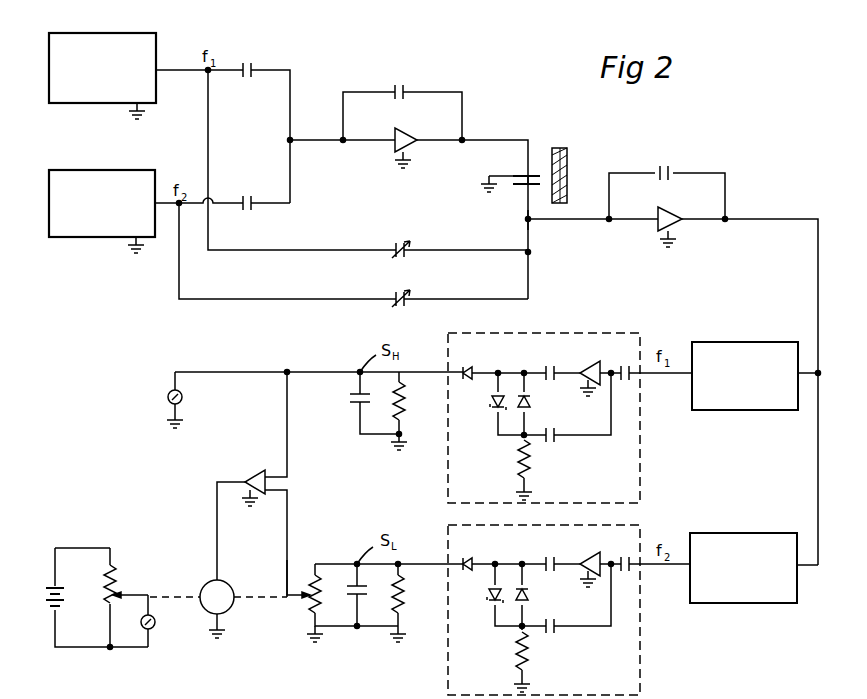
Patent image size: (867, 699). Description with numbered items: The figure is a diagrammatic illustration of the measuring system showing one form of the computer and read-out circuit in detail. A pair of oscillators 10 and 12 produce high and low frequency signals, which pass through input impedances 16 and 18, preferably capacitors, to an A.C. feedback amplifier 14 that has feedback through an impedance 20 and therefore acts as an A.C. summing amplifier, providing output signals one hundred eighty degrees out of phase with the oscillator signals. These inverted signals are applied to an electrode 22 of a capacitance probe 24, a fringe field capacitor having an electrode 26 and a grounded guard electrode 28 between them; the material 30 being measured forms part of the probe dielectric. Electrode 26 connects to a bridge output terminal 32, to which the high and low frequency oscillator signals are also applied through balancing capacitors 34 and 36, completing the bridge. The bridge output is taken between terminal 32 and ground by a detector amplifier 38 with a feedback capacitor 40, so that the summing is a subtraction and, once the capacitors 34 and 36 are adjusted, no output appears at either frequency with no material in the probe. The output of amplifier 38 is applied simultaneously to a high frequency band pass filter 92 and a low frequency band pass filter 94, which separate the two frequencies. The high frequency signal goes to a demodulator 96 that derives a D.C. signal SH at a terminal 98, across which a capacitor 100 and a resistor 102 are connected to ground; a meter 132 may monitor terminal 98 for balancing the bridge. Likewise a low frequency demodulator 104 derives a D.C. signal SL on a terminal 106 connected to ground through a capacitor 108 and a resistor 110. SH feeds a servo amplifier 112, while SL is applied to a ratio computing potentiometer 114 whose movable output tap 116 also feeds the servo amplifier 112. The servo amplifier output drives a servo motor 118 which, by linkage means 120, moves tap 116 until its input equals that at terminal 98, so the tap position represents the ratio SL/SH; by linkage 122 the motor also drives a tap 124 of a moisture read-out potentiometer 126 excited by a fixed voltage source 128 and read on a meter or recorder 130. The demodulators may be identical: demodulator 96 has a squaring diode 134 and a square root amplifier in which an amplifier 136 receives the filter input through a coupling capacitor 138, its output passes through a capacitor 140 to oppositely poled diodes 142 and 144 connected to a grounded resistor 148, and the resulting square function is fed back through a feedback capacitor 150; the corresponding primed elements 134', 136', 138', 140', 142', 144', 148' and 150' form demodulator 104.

The oscillator 10 is at (135, 33).
The low frequency oscillator 12 is at (129, 170).
The A.C. feedback amplifier 14 is at (411, 138).
The input impedance 16 is at (251, 68).
The input impedance 18 is at (251, 201).
The feedback impedance 20 is at (408, 91).
The electrode 22 is at (526, 174).
The capacitance probe 24 is at (540, 160).
The electrode 26 is at (524, 186).
The grounded guard electrode 28 is at (503, 172).
The material 30 is at (567, 158).
The bridge output terminal 32 is at (526, 224).
The balancing capacitor 34 is at (390, 247).
The balancing capacitor 36 is at (390, 295).
The detector amplifier 38 is at (673, 226).
The feedback capacitor 40 is at (669, 171).
The high frequency band pass filter 92 is at (752, 342).
The low frequency band pass filter 94 is at (752, 533).
The demodulator 96 is at (591, 333).
The terminal 98 is at (359, 368).
The capacitor 100 is at (355, 408).
The resistor 102 is at (402, 396).
The low frequency demodulator 104 is at (598, 526).
The terminal 106 is at (358, 556).
The capacitor 108 is at (360, 588).
The resistor 110 is at (399, 580).
The servo amplifier 112 is at (250, 474).
The ratio computing potentiometer 114 is at (318, 588).
The movable output tap 116 is at (293, 606).
The servo motor 118 is at (207, 582).
The linkage means 120 is at (256, 602).
The linkage 122 is at (160, 602).
The tap 124 is at (132, 590).
The moisture read-out potentiometer 126 is at (110, 574).
The fixed voltage source 128 is at (50, 584).
The meter or recorder 130 is at (154, 628).
The meter 132 is at (184, 398).
The diode 134 is at (480, 360).
The amplifier 136 is at (577, 368).
The coupling capacitor 138 is at (614, 357).
The capacitor 140 is at (530, 363).
The diode 142 is at (477, 405).
The diode 144 is at (543, 406).
The resistor 148 is at (542, 470).
The feedback capacitor 150 is at (575, 444).
The diode 134' is at (471, 549).
The amplifier 136' is at (576, 558).
The coupling capacitor 138' is at (618, 547).
The capacitor 140' is at (530, 552).
The diode 142' is at (476, 595).
The diode 144' is at (543, 597).
The resistor 148' is at (543, 662).
The feedback capacitor 150' is at (576, 633).